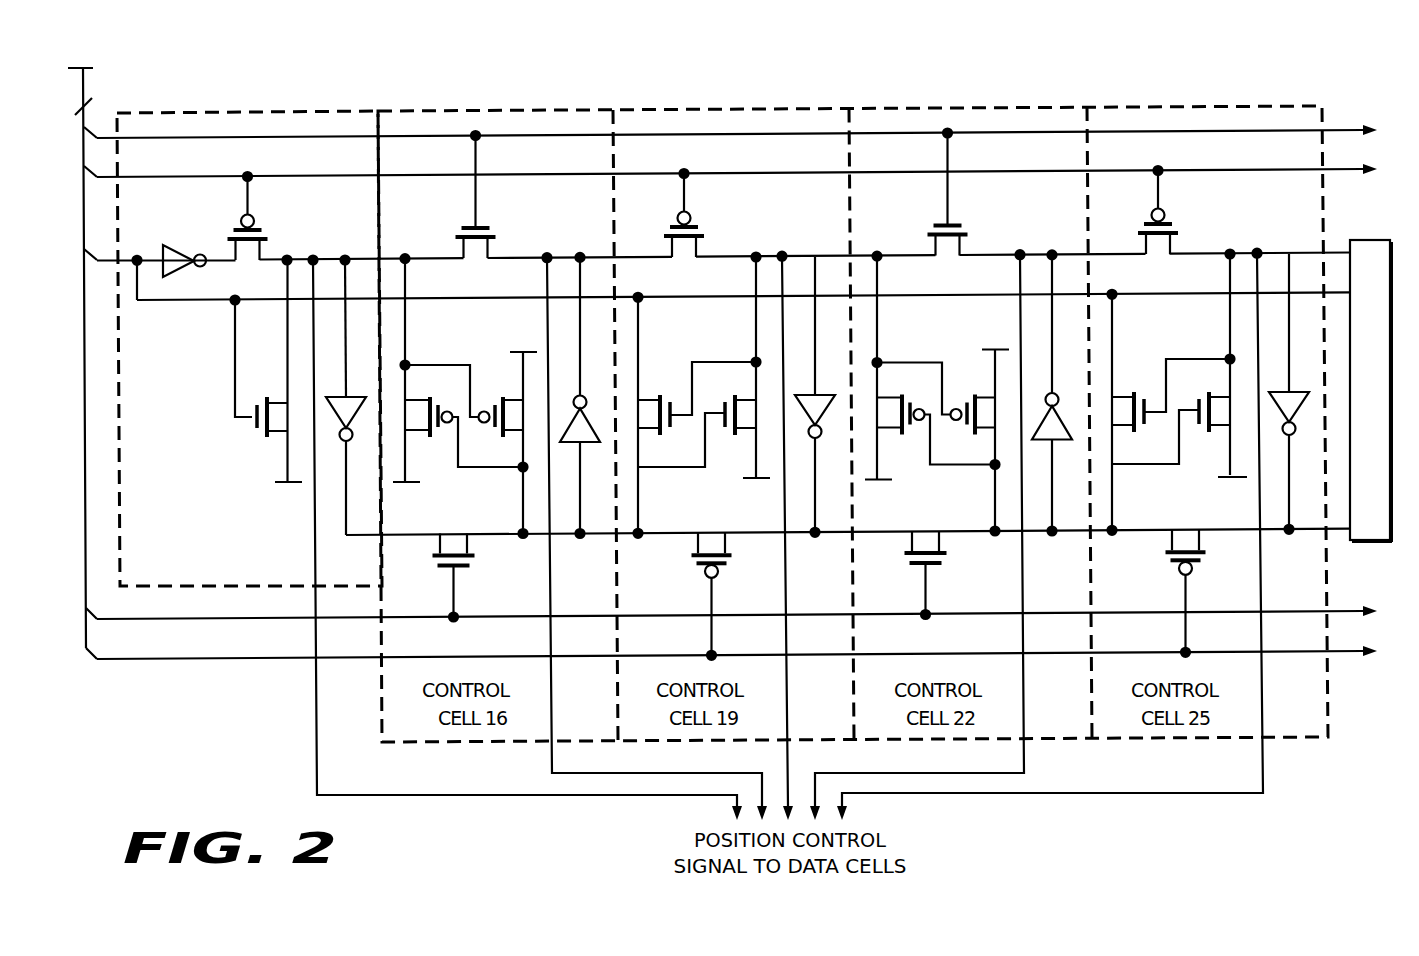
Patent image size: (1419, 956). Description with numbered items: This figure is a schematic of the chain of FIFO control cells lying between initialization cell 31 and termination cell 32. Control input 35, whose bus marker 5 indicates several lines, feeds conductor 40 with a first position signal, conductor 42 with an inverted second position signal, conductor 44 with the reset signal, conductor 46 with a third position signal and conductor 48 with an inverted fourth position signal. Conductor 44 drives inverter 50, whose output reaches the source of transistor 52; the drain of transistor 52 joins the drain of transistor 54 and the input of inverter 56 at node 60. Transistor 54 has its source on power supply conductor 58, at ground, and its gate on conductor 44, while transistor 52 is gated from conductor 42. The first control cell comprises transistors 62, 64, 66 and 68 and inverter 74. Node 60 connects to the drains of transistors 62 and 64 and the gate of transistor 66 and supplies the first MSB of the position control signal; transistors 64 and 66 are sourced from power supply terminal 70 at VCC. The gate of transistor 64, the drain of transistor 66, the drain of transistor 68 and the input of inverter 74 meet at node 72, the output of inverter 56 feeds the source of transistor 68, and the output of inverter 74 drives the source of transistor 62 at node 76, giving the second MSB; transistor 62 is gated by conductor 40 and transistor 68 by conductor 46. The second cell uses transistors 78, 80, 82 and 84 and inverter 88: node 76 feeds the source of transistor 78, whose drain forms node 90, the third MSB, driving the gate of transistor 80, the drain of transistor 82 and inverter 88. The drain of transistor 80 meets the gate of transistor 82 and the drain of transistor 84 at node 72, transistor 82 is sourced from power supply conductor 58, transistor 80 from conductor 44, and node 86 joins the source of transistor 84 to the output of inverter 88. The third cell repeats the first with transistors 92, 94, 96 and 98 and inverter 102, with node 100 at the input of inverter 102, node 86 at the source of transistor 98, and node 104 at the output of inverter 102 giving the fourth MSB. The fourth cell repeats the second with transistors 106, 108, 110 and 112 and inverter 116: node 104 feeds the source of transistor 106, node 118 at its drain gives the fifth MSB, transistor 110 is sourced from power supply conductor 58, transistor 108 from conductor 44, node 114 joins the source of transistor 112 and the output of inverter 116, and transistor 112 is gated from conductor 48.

The bus width indicator 5 is at (92, 101).
The initialization cell 31 is at (323, 111).
The termination cell 32 is at (1372, 238).
The input 35 is at (90, 67).
The conductor 40 is at (224, 137).
The conductor 42 is at (438, 178).
The conductor 44 is at (127, 254).
The conductor 46 is at (165, 621).
The conductor 48 is at (220, 659).
The inverter 50 is at (178, 247).
The transistor 52 is at (268, 232).
The transistor 54 is at (247, 433).
The inverter 56 is at (338, 396).
The power supply conductor 58 is at (282, 484).
The node 60 is at (290, 258).
The transistor 62 is at (497, 229).
The transistor 64 is at (437, 433).
The transistor 66 is at (490, 397).
The transistor 68 is at (462, 568).
The power supply terminal 70 is at (410, 484).
The node 72 is at (524, 538).
The inverter 74 is at (575, 448).
The node 76 is at (580, 256).
The transistor 78 is at (697, 228).
The transistor 80 is at (670, 393).
The transistor 82 is at (727, 437).
The transistor 84 is at (727, 572).
The node 86 is at (815, 538).
The inverter 88 is at (800, 395).
The node 90 is at (756, 255).
The transistor 92 is at (964, 192).
The transistor 94 is at (936, 433).
The transistor 96 is at (973, 398).
The transistor 98 is at (936, 575).
The node 100 is at (1017, 549).
The inverter 102 is at (1049, 462).
The node 104 is at (1048, 305).
The transistor 106 is at (1178, 210).
The transistor 108 is at (1171, 395).
The transistor 110 is at (1209, 431).
The transistor 112 is at (1205, 593).
The node 114 is at (1209, 546).
The inverter 116 is at (1285, 391).
The node 118 is at (1249, 346).